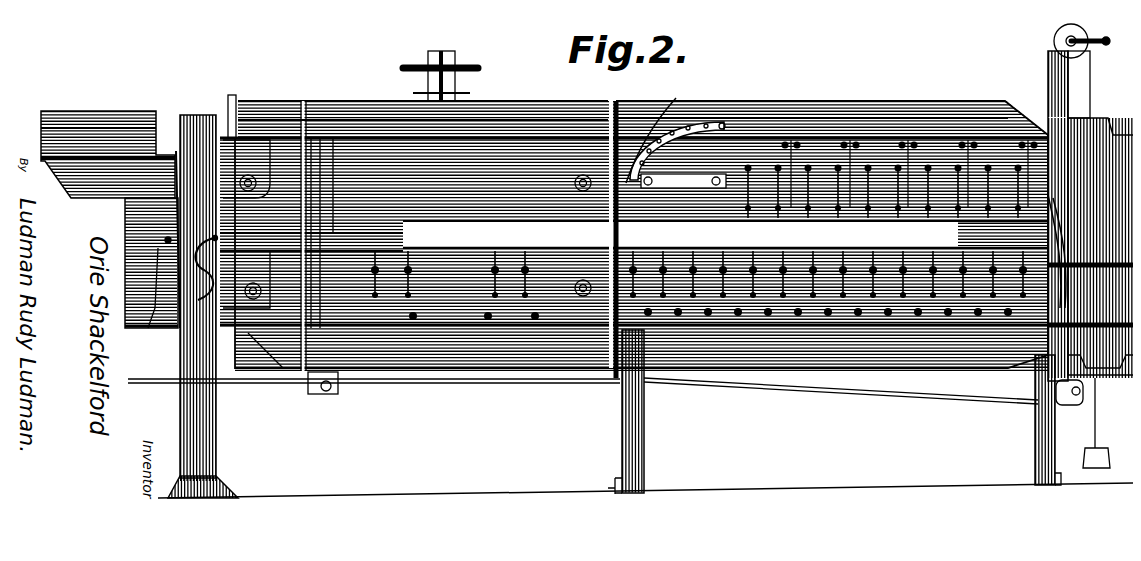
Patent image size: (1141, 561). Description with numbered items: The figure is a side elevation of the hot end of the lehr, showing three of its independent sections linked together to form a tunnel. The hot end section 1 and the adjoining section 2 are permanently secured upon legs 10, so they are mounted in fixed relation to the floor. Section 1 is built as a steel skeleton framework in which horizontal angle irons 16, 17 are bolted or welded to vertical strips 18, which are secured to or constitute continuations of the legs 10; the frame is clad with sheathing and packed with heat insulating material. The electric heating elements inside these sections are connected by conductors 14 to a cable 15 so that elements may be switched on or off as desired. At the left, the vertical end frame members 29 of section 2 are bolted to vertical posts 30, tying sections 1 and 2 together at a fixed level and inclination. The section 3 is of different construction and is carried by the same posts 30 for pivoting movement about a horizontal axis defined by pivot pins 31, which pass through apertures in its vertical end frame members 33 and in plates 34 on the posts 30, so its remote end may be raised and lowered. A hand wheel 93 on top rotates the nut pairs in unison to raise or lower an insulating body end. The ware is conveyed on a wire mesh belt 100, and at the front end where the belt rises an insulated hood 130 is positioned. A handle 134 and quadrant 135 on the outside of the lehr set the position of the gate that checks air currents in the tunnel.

The hot end section 1 is at (837, 120).
The section 2 is at (480, 137).
The section 3 is at (57, 153).
The legs 10 is at (623, 430).
The conductors 14 is at (876, 196).
The cable 15 is at (192, 305).
The horizontal angle iron 16 is at (790, 100).
The horizontal angle iron 17 is at (748, 347).
The vertical strips 18 is at (623, 147).
The vertical end frame members 29 is at (219, 127).
The vertical posts 30 is at (205, 433).
The pivot pins 31 is at (157, 235).
The vertical end frame members 33 is at (150, 240).
The plates 34 is at (168, 143).
The hand wheel 93 is at (460, 58).
The wire mesh belt 100 is at (414, 374).
The insulated hood 130 is at (1098, 113).
The handle 134 is at (687, 172).
The quadrant 135 is at (684, 107).